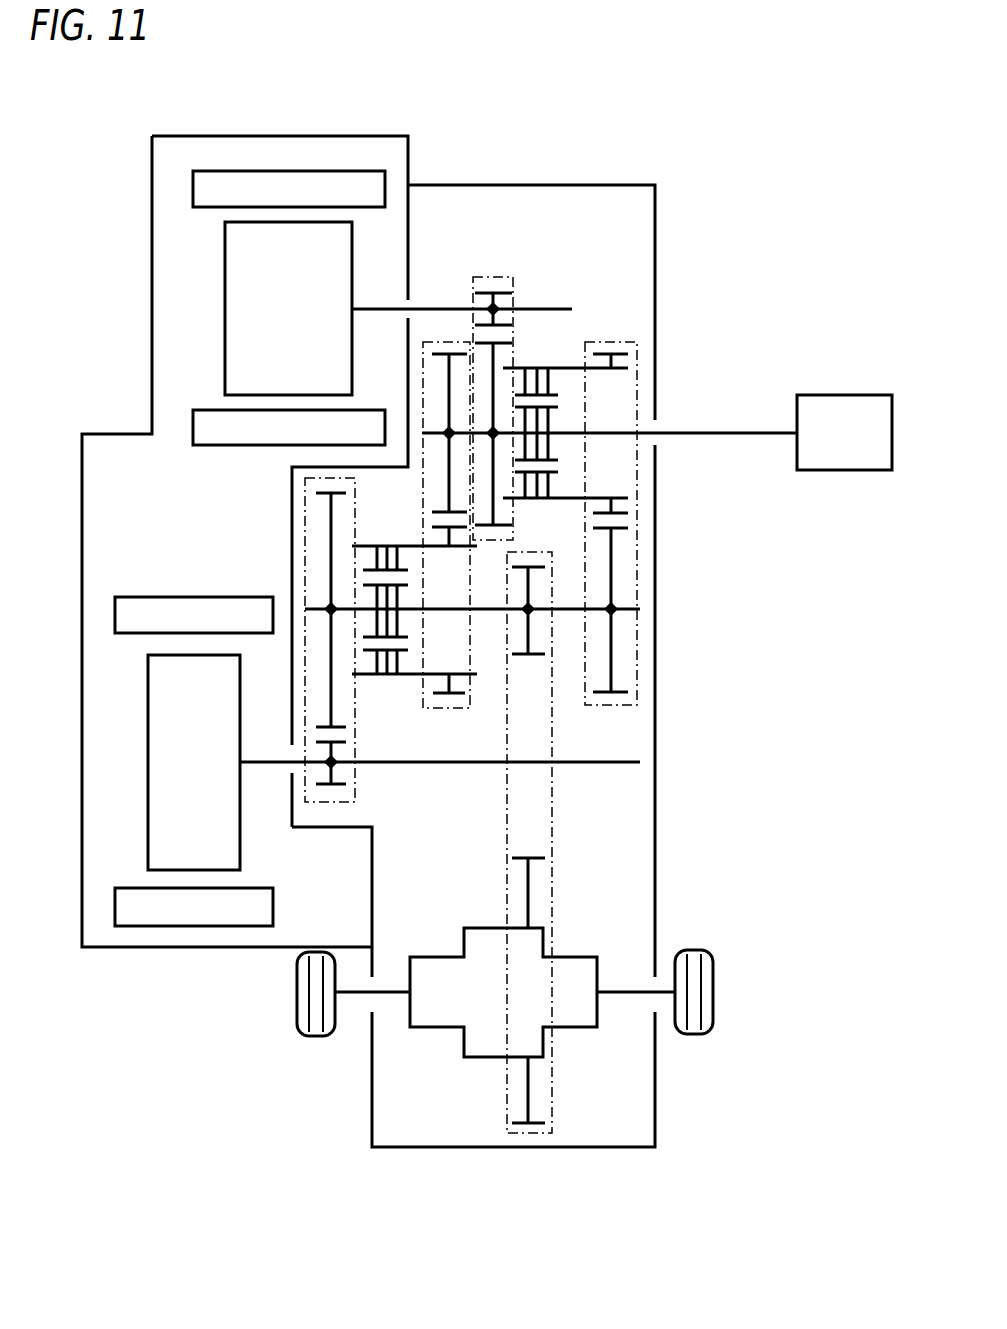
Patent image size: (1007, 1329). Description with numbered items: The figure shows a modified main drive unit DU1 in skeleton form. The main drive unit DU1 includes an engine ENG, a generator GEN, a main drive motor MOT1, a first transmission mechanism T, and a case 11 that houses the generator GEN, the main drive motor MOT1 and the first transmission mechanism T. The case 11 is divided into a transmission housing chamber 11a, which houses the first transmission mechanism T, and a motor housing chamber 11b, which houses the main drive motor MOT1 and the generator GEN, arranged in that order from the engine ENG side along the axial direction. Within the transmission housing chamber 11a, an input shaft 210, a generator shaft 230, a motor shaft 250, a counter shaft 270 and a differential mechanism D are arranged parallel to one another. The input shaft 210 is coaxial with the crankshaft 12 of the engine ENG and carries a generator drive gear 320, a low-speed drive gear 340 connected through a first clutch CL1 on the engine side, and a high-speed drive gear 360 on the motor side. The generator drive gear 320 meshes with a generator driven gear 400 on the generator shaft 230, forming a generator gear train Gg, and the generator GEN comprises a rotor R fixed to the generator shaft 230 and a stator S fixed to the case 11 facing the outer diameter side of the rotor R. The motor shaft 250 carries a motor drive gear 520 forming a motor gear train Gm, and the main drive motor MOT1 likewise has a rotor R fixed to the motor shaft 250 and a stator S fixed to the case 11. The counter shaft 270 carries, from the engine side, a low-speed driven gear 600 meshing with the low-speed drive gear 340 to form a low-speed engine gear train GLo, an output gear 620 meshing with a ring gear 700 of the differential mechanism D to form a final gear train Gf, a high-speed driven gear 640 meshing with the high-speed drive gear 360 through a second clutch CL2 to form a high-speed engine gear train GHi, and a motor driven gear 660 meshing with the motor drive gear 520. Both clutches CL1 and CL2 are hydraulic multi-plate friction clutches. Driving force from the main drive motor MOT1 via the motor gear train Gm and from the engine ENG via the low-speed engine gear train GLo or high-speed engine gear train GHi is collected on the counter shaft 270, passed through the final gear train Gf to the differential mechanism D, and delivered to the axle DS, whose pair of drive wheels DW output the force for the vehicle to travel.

The case 11 is at (400, 641).
The transmission housing chamber 11a is at (630, 811).
The motor housing chamber 11b is at (122, 467).
The crankshaft 12 is at (762, 430).
The input shaft 210 is at (642, 428).
The generator shaft 230 is at (568, 309).
The motor shaft 250 is at (625, 755).
The counter shaft 270 is at (630, 612).
The generator drive gear 320 is at (507, 358).
The low-speed drive gear 340 is at (625, 352).
The high-speed drive gear 360 is at (440, 352).
The generator driven gear 400 is at (488, 291).
The motor drive gear 520 is at (345, 785).
The low-speed driven gear 600 is at (628, 528).
The output gear 620 is at (540, 566).
The high-speed driven gear 640 is at (462, 697).
The motor driven gear 660 is at (345, 492).
The ring gear 700 is at (512, 857).
The main drive unit DU1 is at (460, 158).
The first transmission mechanism T is at (556, 222).
The generator gear train Gg is at (513, 283).
The first clutch CL1 is at (567, 380).
The second clutch CL2 is at (370, 552).
The low-speed engine gear train GLo is at (637, 470).
The high-speed engine gear train GHi is at (420, 693).
The motor gear train Gm is at (322, 803).
The final gear train Gf is at (553, 913).
The differential mechanism D is at (460, 918).
The axle DS is at (393, 995).
The drive wheels DW is at (297, 1010).
The engine ENG is at (844, 432).
The generator GEN is at (210, 532).
The main drive motor MOT1 is at (100, 596).
The stator S is at (195, 192).
The rotor R is at (90, 276).